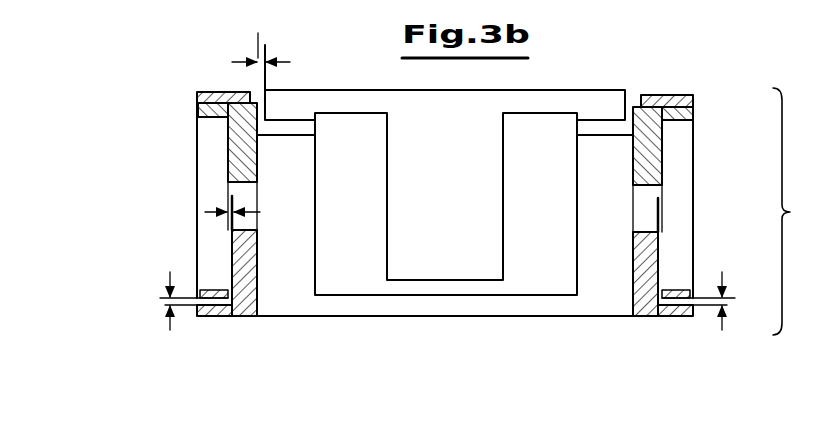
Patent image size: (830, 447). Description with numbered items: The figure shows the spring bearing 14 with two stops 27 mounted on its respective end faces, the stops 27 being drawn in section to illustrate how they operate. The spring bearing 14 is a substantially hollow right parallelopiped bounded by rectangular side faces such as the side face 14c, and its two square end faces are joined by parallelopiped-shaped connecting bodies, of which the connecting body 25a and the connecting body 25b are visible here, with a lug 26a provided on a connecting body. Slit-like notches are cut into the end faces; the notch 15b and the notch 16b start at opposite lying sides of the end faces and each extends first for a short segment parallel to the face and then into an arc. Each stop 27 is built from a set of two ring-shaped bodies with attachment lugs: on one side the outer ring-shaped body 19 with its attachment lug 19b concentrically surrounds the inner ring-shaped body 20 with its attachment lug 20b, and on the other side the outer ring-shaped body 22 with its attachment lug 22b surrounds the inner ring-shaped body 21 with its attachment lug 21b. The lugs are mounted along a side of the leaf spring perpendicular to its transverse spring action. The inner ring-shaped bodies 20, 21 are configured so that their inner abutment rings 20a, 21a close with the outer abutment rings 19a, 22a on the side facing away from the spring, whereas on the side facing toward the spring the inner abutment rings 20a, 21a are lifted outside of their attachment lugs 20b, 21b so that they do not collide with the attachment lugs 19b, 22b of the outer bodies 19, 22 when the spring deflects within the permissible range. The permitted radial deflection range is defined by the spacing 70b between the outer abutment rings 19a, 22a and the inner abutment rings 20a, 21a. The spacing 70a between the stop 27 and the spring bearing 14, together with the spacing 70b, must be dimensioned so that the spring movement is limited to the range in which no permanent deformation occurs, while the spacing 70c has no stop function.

The spring bearing 14 is at (545, 88).
The rectangular side face 14c is at (475, 303).
The notch 15b is at (305, 127).
The notch 16b is at (607, 130).
The outer ring-shaped body 19 is at (664, 318).
The outer abutment ring 19a is at (686, 318).
The attachment lug 19b is at (646, 247).
The inner ring-shaped body 20 is at (695, 115).
The inner abutment ring 20a is at (676, 119).
The attachment lug 20b is at (661, 162).
The inner ring-shaped body 21 is at (196, 115).
The inner abutment ring 21a is at (205, 127).
The attachment lug 21b is at (235, 157).
The outer ring-shaped body 22 is at (222, 318).
The outer abutment ring 22a is at (205, 317).
The attachment lug 22b is at (247, 318).
The connecting body 25a is at (411, 303).
The connecting body 25b is at (338, 100).
The lug 26a is at (487, 203).
The stop 27 is at (797, 211).
The spacing 70a is at (228, 196).
The spacing 70b is at (158, 298).
The spacing 70c is at (261, 34).